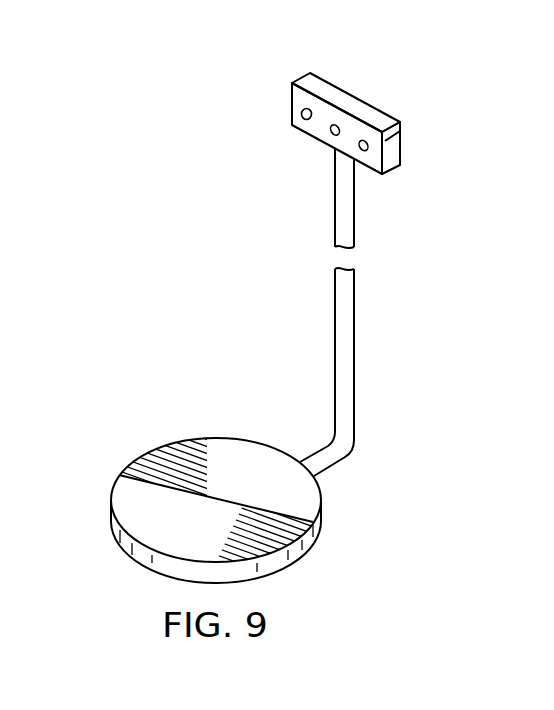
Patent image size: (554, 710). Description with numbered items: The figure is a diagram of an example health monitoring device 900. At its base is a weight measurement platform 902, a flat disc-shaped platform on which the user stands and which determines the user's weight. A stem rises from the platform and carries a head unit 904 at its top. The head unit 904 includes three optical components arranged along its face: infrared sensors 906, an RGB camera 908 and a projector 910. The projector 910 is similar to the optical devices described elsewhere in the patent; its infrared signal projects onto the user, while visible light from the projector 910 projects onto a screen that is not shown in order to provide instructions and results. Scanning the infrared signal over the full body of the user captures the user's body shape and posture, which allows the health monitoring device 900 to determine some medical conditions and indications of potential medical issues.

The health monitoring device 900 is at (120, 251).
The weight measurement platform 902 is at (110, 510).
The head unit 904 is at (358, 90).
The infrared sensors 906 is at (301, 113).
The RGB camera 908 is at (331, 134).
The projector 910 is at (368, 150).